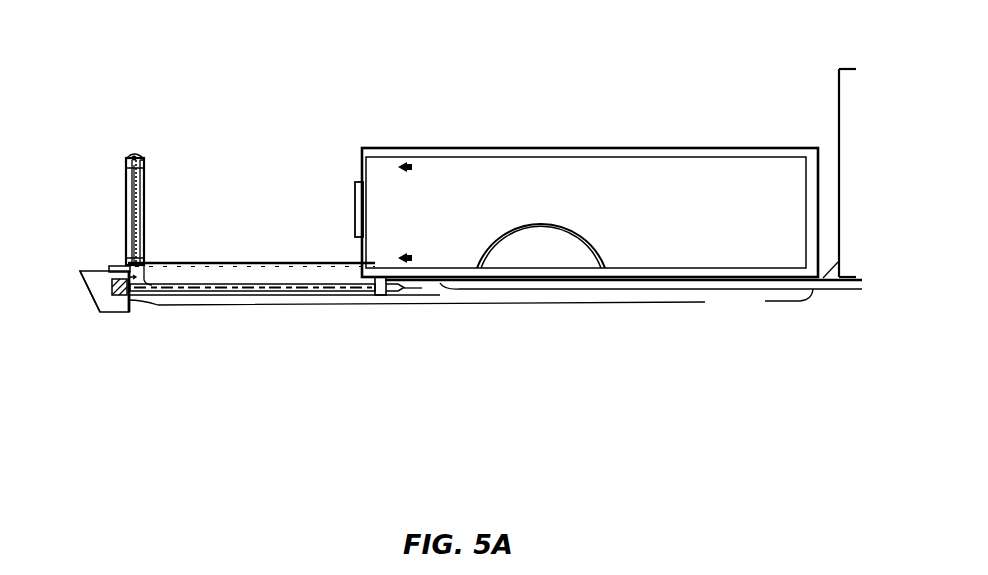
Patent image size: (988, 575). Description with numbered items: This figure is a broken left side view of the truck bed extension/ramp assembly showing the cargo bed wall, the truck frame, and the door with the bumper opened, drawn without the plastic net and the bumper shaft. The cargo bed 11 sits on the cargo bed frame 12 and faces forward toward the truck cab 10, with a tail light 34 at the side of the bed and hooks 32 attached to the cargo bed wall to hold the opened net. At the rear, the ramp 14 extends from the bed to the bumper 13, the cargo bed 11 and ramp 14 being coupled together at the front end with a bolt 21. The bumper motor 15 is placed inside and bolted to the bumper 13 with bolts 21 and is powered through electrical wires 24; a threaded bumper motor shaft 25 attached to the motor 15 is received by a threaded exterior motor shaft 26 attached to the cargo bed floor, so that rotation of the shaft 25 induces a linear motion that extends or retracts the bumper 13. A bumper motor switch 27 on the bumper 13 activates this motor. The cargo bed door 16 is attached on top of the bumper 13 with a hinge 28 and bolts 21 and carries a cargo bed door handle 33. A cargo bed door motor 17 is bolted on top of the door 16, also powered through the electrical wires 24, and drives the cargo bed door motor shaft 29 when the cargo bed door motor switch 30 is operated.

The truck cab 10 is at (847, 68).
The cargo bed 11 is at (650, 137).
The cargo bed frame 12 is at (843, 290).
The bumper 13 is at (88, 297).
The ramp 14 is at (307, 263).
The bumper motor 15 is at (119, 292).
The cargo bed door 16 is at (114, 192).
The cargo bed door motor 17 is at (128, 157).
The bolt 21 is at (134, 157).
The electrical wire 24 is at (215, 305).
The bumper motor shaft 25 is at (282, 288).
The exterior motor shaft 26 is at (380, 295).
The bumper motor switch 27 is at (100, 273).
The hinge 28 is at (125, 260).
The cargo bed door motor shaft 29 is at (136, 213).
The cargo bed door motor switch 30 is at (146, 158).
The hook 32 is at (408, 164).
The cargo bed door handle 33 is at (120, 164).
The tail light 34 is at (357, 182).